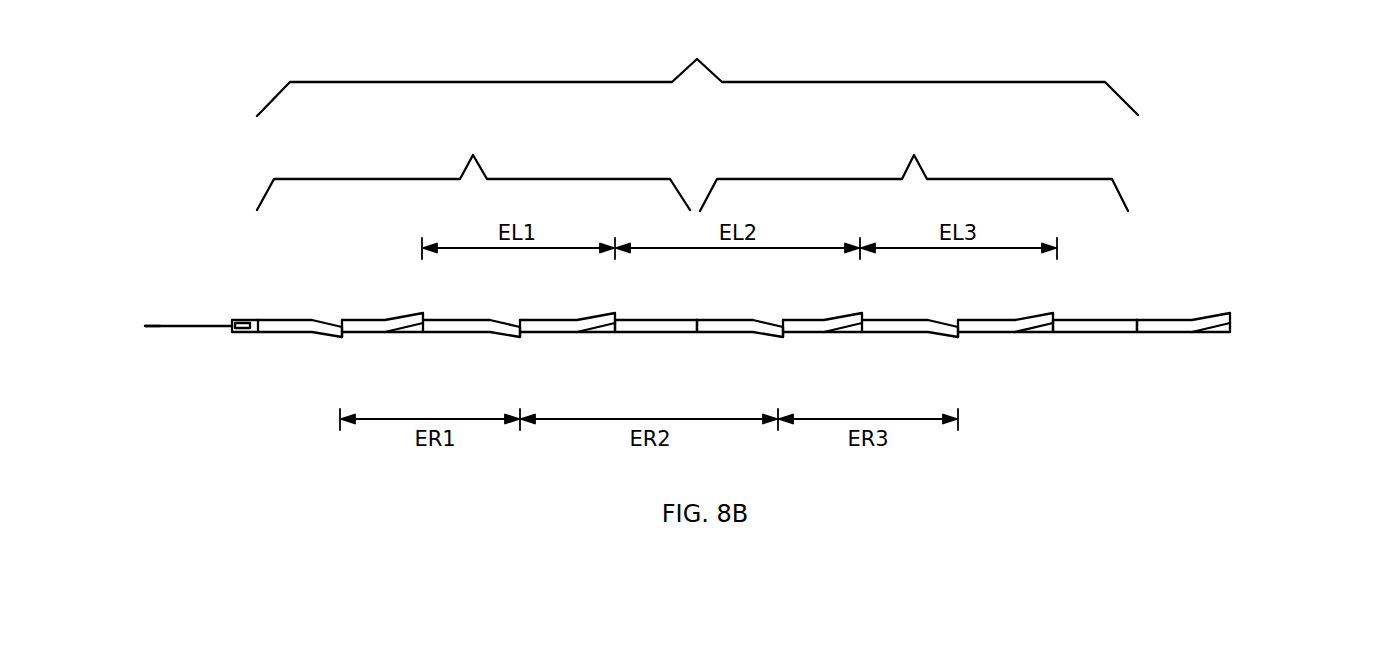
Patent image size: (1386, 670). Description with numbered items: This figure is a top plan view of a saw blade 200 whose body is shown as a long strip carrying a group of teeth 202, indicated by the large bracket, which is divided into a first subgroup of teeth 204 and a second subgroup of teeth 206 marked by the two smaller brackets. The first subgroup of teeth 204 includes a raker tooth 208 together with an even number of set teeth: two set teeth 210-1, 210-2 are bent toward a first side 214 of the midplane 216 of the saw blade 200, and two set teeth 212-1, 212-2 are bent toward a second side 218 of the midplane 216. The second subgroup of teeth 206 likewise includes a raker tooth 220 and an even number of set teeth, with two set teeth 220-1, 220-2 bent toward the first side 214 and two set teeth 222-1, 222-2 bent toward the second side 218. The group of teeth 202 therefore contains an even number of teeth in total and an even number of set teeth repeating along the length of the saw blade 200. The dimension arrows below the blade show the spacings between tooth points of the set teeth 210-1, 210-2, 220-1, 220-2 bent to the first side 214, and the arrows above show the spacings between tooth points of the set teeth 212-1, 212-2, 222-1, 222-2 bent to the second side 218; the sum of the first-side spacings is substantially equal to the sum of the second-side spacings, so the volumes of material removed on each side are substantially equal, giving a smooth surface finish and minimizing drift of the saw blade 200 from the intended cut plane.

The saw blade 200 is at (1232, 316).
The group of teeth 202 is at (697, 73).
The first subgroup of teeth 204 is at (473, 167).
The second subgroup of teeth 206 is at (914, 167).
The raker tooth 208 is at (643, 334).
The set tooth 210-1 is at (328, 338).
The set tooth 210-2 is at (507, 338).
The set tooth 212-1 is at (418, 316).
The set tooth 212-2 is at (605, 316).
The first side 214 is at (185, 398).
The midplane 216 is at (170, 325).
The second side 218 is at (122, 206).
The raker tooth 220 is at (1088, 334).
The set tooth 220-1 is at (765, 338).
The set tooth 220-2 is at (950, 338).
The set tooth 222-1 is at (850, 316).
The set tooth 222-2 is at (1045, 316).